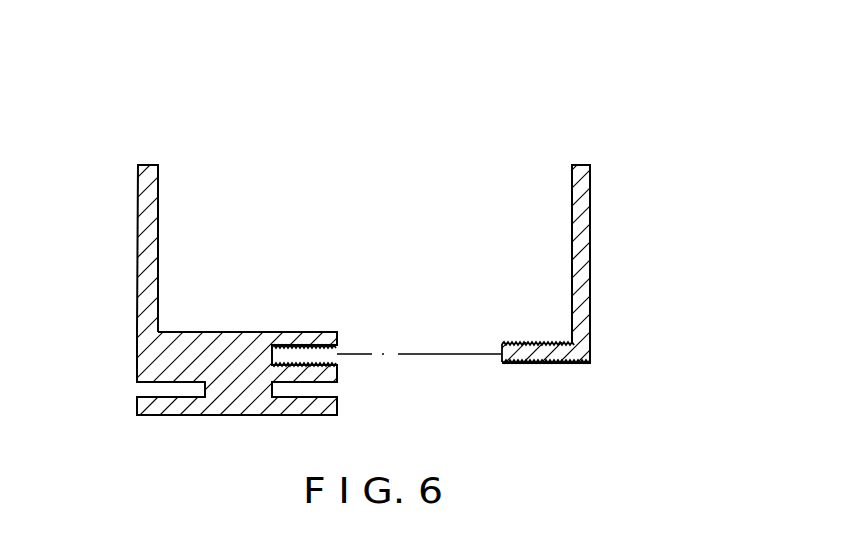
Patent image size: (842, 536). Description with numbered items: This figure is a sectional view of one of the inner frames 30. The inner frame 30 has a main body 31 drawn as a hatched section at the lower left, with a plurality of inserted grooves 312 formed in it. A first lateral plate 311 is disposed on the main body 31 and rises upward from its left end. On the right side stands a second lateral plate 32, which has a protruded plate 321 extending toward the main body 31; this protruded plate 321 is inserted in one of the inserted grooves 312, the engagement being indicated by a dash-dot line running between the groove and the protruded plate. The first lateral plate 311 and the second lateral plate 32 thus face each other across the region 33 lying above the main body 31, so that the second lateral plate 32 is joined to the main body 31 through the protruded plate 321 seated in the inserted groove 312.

The inner frame 30 is at (421, 214).
The main body 31 is at (310, 257).
The first lateral plate 311 is at (142, 165).
The inserted grooves 312 is at (342, 358).
The second lateral plate 32 is at (571, 245).
The protruded plate 321 is at (540, 352).
The receiving space 33 is at (358, 115).